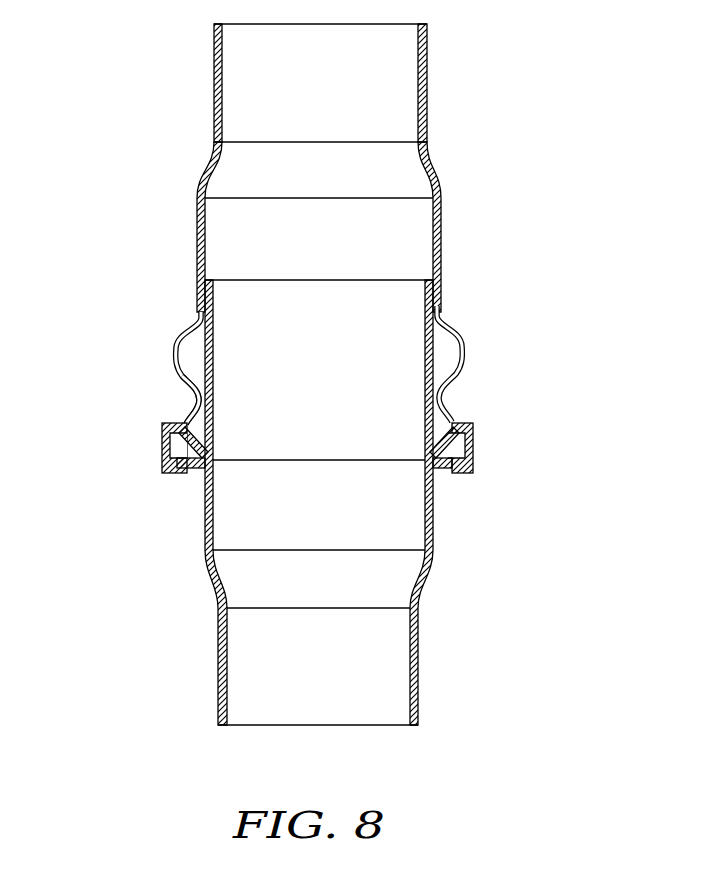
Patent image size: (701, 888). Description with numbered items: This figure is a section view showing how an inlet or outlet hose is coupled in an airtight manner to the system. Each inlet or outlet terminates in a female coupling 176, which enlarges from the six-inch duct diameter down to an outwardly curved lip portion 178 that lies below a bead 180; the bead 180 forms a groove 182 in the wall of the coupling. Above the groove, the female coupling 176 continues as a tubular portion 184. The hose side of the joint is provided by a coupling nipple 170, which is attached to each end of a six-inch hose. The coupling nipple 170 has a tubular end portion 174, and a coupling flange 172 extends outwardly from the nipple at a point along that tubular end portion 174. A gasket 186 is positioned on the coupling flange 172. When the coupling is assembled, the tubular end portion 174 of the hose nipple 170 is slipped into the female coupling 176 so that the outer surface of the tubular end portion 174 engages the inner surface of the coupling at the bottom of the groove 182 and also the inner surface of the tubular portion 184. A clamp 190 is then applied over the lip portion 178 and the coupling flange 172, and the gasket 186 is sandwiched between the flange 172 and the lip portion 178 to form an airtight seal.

The coupling nipple 170 is at (212, 580).
The coupling flange 172 is at (443, 473).
The tubular end portion 174 is at (437, 343).
The female coupling 176 is at (207, 175).
The outwardly curved lip portion 178 is at (183, 423).
The bead 180 is at (178, 340).
The groove 182 is at (197, 395).
The tubular portion 184 is at (199, 235).
The gasket 186 is at (195, 468).
The clamp 190 is at (475, 445).